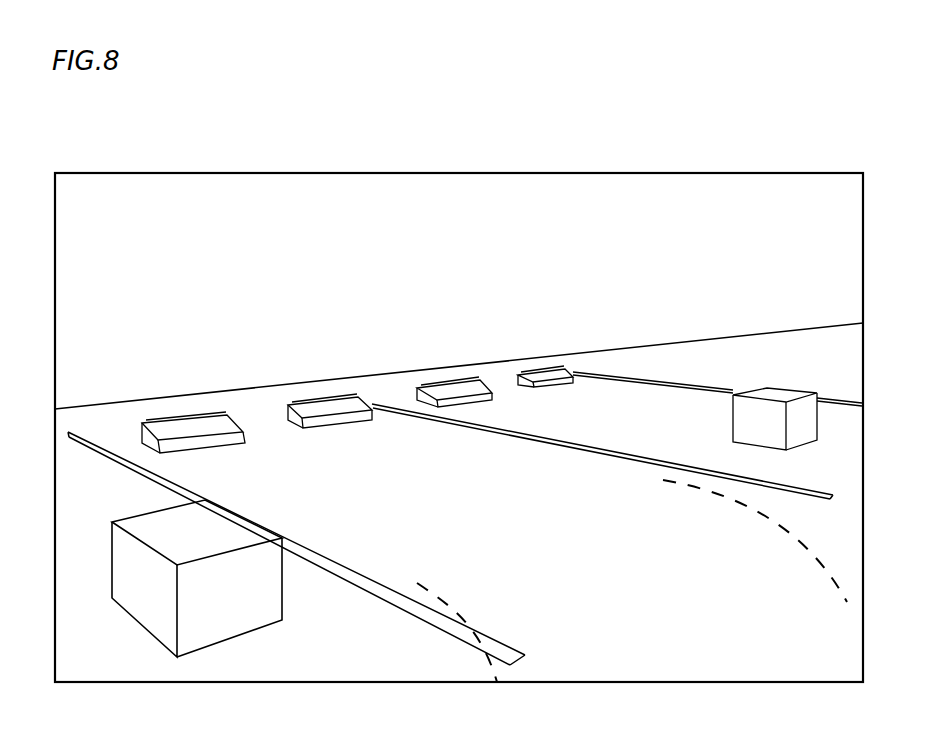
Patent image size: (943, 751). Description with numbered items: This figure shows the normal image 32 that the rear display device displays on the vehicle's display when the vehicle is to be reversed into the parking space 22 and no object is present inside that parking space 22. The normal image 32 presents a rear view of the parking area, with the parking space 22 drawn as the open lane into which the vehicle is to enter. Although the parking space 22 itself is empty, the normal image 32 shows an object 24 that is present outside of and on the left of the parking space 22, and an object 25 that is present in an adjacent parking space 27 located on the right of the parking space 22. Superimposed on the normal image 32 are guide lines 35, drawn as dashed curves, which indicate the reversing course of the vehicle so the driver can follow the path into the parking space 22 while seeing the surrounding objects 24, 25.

The parking space 22 is at (230, 473).
The object 24 is at (143, 592).
The object 25 is at (780, 396).
The parking space 27 is at (615, 382).
The normal image 32 is at (813, 173).
The guide lines 35 is at (800, 541).